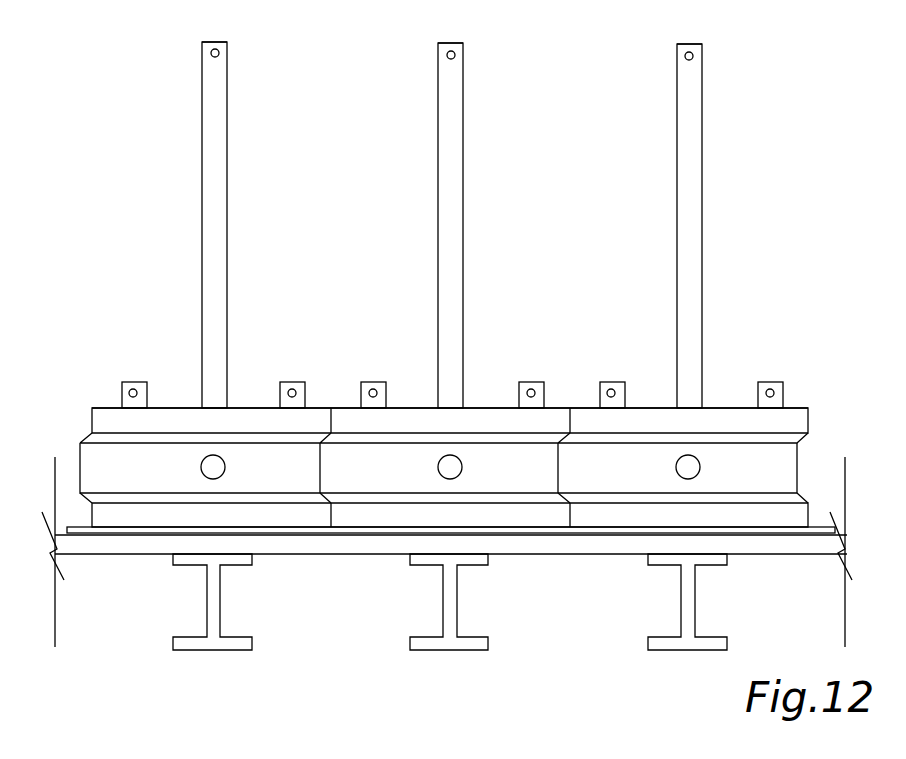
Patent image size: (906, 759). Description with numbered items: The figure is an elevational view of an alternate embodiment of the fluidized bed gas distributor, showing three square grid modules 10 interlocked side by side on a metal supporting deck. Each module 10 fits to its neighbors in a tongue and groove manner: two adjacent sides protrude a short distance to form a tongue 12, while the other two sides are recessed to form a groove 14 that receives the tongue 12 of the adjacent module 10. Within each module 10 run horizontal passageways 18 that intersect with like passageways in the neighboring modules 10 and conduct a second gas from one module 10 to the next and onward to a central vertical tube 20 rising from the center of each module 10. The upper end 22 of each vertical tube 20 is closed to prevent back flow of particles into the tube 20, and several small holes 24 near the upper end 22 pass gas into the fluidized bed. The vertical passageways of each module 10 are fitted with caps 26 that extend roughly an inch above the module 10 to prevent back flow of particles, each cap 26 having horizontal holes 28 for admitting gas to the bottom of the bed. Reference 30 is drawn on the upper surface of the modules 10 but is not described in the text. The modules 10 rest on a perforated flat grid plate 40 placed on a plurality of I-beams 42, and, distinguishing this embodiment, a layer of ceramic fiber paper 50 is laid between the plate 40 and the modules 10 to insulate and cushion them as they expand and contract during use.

The square grid module 10 is at (92, 423).
The tongue 12 is at (80, 450).
The groove 14 is at (797, 464).
The horizontal passageway 18 is at (201, 467).
The vertical tube 20 is at (202, 179).
The upper end 22 is at (208, 42).
The small holes 24 is at (219, 53).
The cap 26 is at (136, 382).
The horizontal holes 28 is at (129, 393).
The top plate 30 is at (161, 408).
The perforated flat grid plate 40 is at (107, 549).
The I-beam 42 is at (208, 600).
The ceramic fiber paper 50 is at (612, 533).